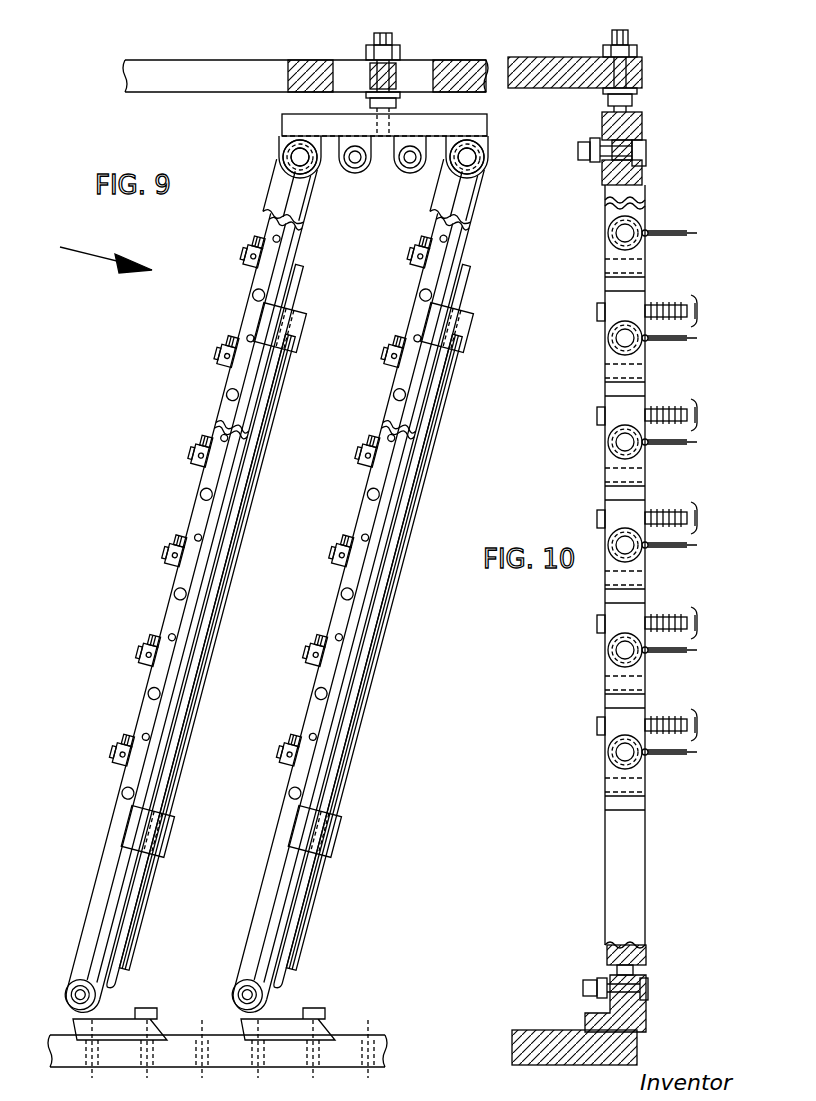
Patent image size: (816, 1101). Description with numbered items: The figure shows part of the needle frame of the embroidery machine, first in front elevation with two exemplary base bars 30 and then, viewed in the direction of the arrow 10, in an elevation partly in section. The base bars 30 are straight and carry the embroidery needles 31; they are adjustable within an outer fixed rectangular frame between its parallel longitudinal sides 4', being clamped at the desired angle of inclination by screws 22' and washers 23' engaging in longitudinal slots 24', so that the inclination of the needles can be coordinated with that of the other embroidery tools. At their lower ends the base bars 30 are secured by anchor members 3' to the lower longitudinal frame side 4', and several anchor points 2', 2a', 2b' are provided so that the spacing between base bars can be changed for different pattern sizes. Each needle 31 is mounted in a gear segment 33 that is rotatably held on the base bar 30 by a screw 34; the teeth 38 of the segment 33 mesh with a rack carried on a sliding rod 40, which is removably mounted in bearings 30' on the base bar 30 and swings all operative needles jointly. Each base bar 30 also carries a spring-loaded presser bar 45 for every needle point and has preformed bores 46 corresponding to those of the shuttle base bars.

In FIG. 9, the arrow 10 is at (89, 252).
In FIG. 9, the longitudinal slots 24' is at (305, 53).
In FIG. 9, the screws 22' is at (408, 75).
In FIG. 10, the screws 22' is at (602, 63).
In FIG. 9, the washers 23' is at (421, 60).
In FIG. 9, the longitudinal sides 4' is at (275, 546).
In FIG. 10, the longitudinal sides 4' is at (561, 561).
In FIG. 9, the anchor members 3' is at (280, 574).
In FIG. 10, the anchor members 3' is at (599, 570).
In FIG. 9, the anchor point 2' is at (379, 157).
In FIG. 10, the anchor point 2' is at (605, 569).
In FIG. 9, the anchor point 2a' is at (239, 575).
In FIG. 9, the anchor point 2b' is at (314, 575).
In FIG. 9, the base bars 30 is at (273, 575).
In FIG. 10, the base bars 30 is at (599, 566).
In FIG. 9, the bearings 30' is at (321, 570).
In FIG. 9, the needles 31 is at (168, 564).
In FIG. 10, the needles 31 is at (660, 230).
In FIG. 9, the gear segment 33 is at (146, 639).
In FIG. 10, the gear segment 33 is at (616, 348).
In FIG. 9, the screw 34 is at (142, 656).
In FIG. 10, the screw 34 is at (616, 336).
In FIG. 9, the teeth 38 is at (176, 536).
In FIG. 10, the teeth 38 is at (602, 338).
In FIG. 9, the sliding rod 40 is at (198, 702).
In FIG. 10, the spring-loaded presser bar 45 is at (692, 296).
In FIG. 9, the preformed bores 46 is at (148, 704).